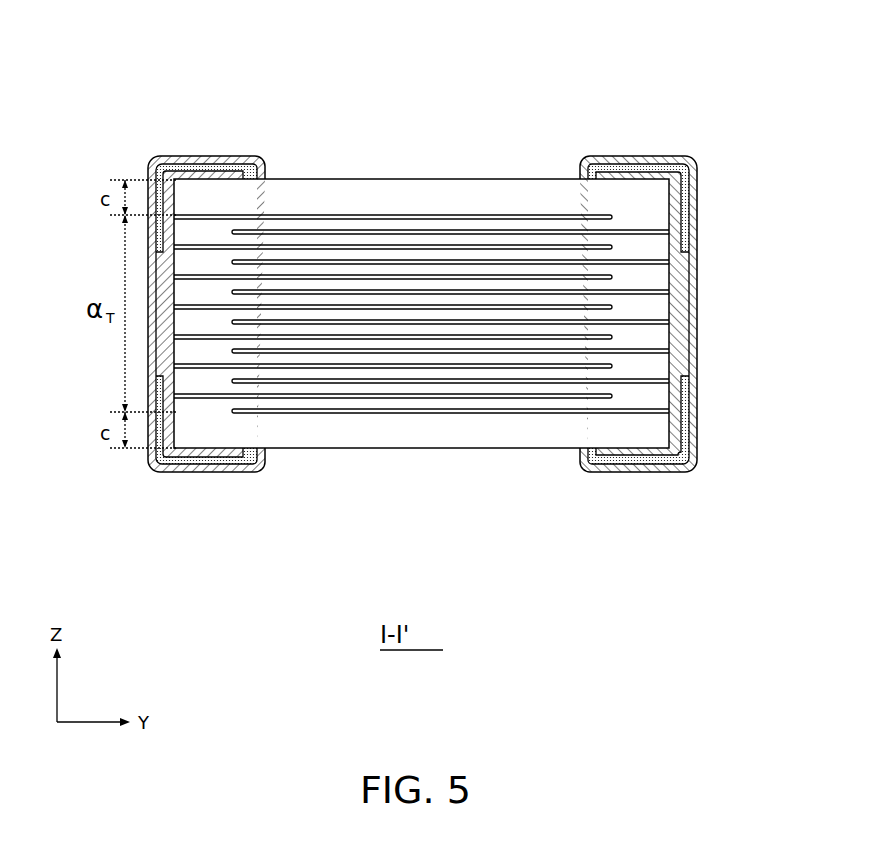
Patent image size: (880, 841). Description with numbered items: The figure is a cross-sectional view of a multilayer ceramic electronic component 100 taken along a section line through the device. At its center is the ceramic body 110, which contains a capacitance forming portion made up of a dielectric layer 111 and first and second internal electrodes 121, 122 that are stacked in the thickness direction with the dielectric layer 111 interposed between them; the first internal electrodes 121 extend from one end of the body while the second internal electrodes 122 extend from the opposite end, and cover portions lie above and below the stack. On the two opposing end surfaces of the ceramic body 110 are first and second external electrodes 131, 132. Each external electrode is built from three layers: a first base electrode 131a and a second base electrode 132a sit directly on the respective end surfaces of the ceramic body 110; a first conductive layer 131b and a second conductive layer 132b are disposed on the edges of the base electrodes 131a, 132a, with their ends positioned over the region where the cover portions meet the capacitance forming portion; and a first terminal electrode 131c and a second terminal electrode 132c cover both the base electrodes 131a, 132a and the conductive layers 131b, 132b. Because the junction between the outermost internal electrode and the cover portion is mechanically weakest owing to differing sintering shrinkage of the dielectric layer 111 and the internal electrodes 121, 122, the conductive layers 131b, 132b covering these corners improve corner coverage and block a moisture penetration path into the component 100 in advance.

The multilayer ceramic electronic component 100 is at (440, 26).
The ceramic body 110 is at (474, 364).
The dielectric layer 111 is at (660, 283).
The first internal electrode 121 is at (612, 277).
The second internal electrode 122 is at (640, 293).
The first external electrode 131 is at (198, 318).
The first base electrode 131a is at (181, 317).
The first conductive layer 131b is at (204, 163).
The first terminal electrode 131c is at (236, 157).
The second external electrode 132 is at (655, 318).
The second base electrode 132a is at (625, 317).
The second conductive layer 132b is at (641, 163).
The second terminal electrode 132c is at (697, 187).